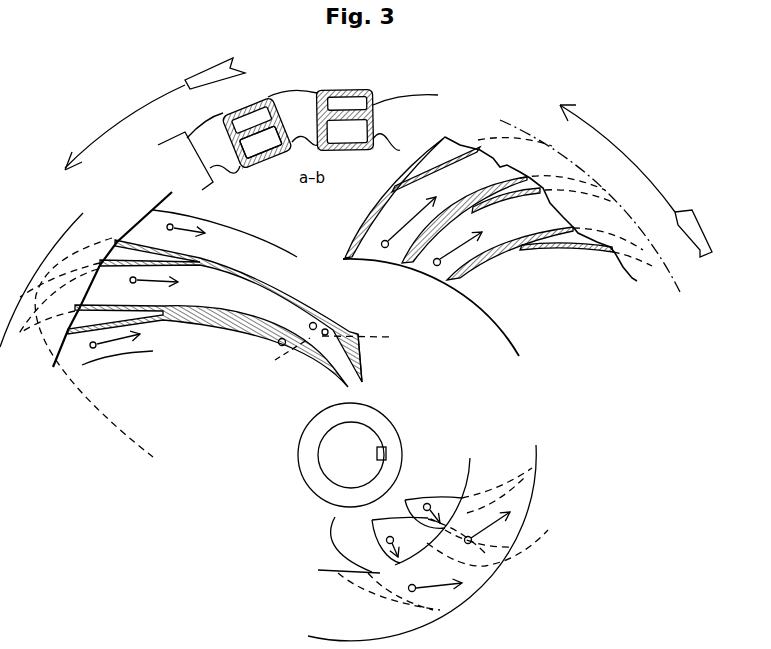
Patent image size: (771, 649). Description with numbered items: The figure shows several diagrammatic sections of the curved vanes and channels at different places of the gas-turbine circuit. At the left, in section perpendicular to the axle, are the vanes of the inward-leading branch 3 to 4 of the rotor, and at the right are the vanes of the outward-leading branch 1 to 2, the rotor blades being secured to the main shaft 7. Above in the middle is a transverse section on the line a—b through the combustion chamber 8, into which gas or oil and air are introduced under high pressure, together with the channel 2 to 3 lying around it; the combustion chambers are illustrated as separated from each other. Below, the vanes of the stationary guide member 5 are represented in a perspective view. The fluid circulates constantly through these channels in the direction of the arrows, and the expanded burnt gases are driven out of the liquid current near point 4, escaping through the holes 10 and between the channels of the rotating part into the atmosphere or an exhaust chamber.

The rotor blade section 1 is at (478, 246).
The rotor channel section 2 is at (213, 143).
The rotor vane section 3 is at (207, 289).
The rotor vane section 4 is at (333, 358).
The stationary guide member 5 is at (428, 543).
The main shaft 7 is at (350, 455).
The combustion chamber 8 is at (258, 145).
The holes 10 is at (310, 327).